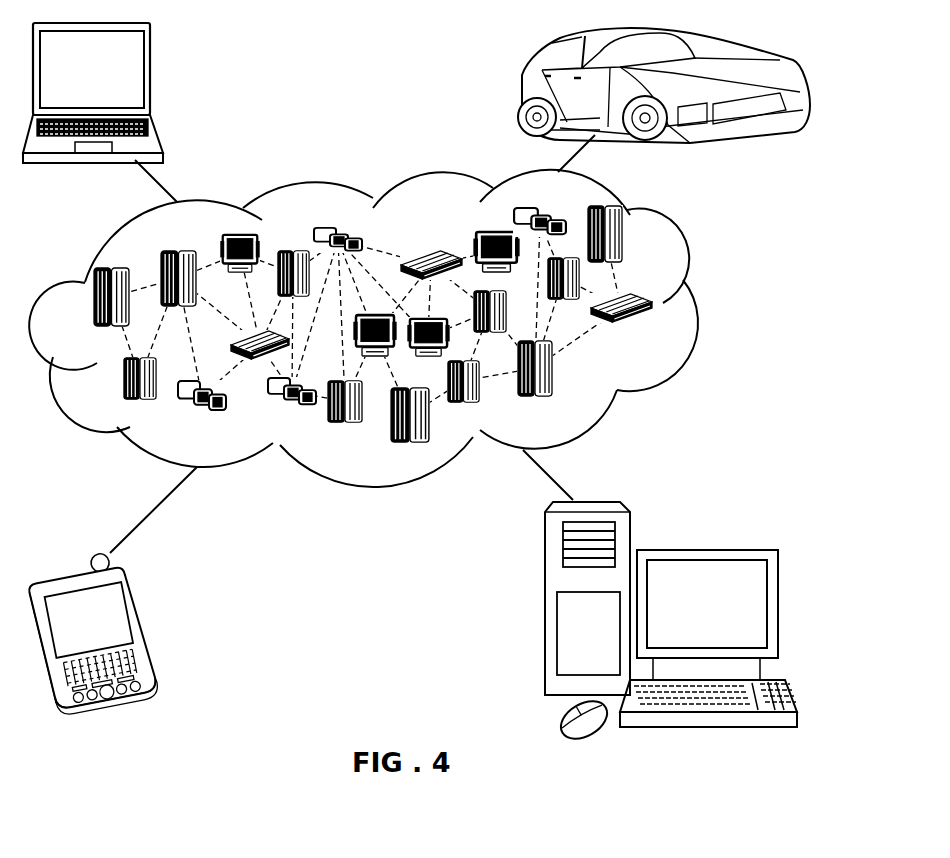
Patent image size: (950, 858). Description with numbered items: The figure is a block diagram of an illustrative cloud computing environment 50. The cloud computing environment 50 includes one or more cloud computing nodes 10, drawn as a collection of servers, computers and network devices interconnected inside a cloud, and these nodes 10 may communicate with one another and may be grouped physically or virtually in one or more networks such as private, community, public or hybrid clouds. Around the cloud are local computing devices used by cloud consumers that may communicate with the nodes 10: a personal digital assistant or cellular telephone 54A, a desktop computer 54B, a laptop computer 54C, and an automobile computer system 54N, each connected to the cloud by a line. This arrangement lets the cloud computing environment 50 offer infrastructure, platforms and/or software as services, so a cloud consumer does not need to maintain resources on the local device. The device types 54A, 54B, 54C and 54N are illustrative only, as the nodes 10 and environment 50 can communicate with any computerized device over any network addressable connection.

The cloud computing nodes 10 is at (390, 328).
The cloud computing environment 50 is at (705, 306).
The personal digital assistant (PDA) or cellular telephone 54A is at (143, 628).
The desktop computer 54B is at (706, 550).
The laptop computer 54C is at (152, 73).
The automobile computer system 54N is at (521, 90).